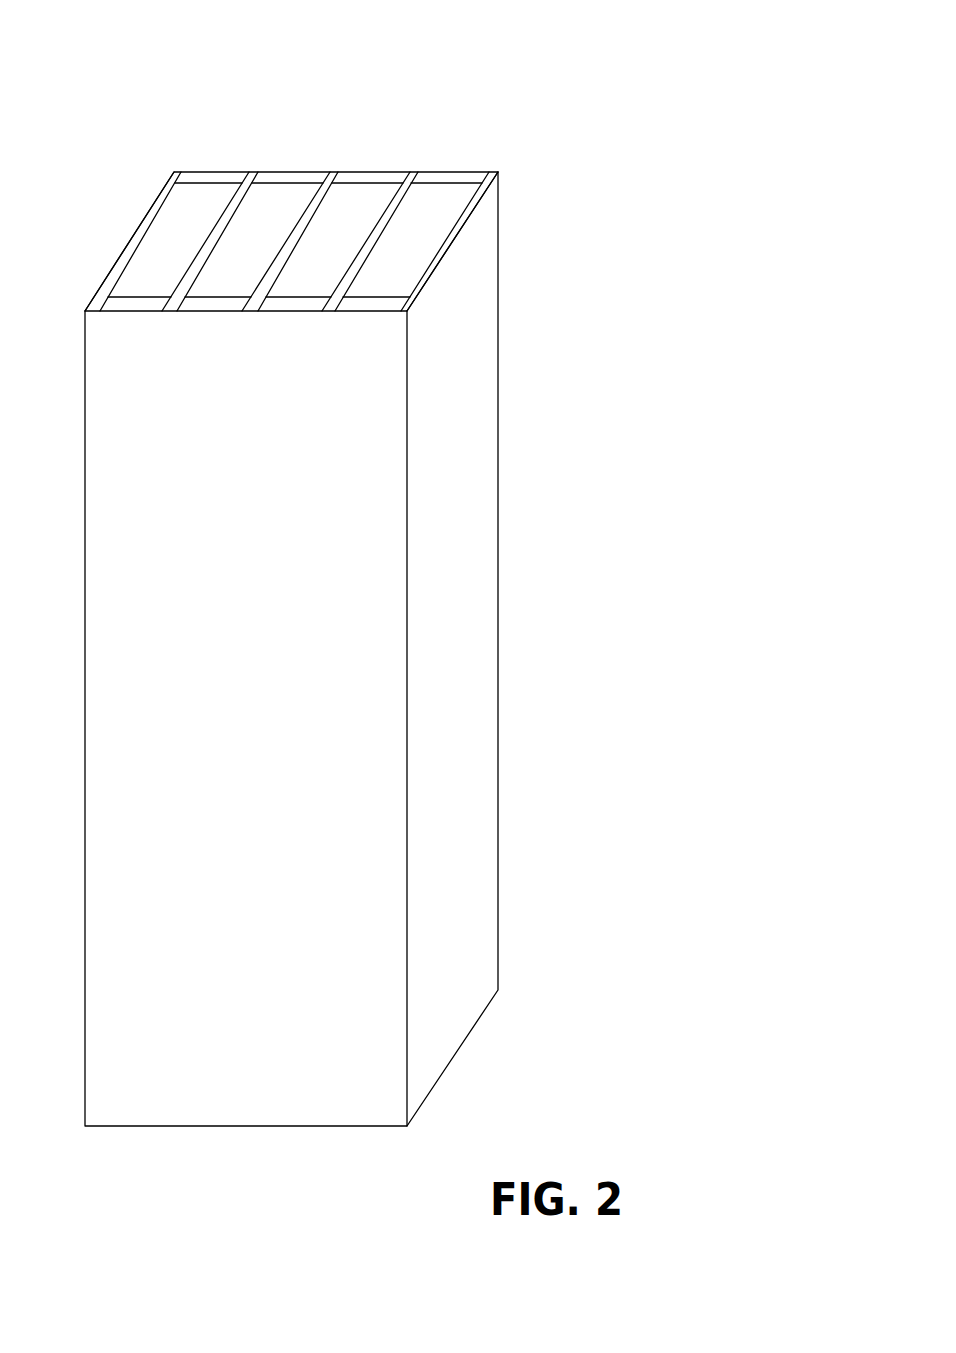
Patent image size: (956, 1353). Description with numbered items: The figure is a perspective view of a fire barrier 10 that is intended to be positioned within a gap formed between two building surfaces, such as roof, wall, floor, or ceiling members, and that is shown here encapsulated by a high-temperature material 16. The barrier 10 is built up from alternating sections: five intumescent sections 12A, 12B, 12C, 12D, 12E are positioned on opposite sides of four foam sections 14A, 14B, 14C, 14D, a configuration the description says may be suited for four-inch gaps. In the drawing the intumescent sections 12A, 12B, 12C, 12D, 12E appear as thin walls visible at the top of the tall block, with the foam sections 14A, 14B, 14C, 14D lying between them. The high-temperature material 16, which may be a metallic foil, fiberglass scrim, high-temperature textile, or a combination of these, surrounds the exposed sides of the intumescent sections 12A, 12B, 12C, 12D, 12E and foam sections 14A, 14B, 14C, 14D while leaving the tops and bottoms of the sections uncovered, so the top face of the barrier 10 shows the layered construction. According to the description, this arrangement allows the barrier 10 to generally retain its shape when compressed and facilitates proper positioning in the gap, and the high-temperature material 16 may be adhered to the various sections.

The fire barrier 10 is at (545, 78).
The intumescent section 12A is at (137, 231).
The intumescent section 12B is at (213, 232).
The intumescent section 12C is at (280, 260).
The intumescent section 12D is at (353, 268).
The intumescent section 12E is at (423, 286).
The foam section 14A is at (203, 197).
The foam section 14B is at (280, 197).
The foam section 14C is at (358, 197).
The foam section 14D is at (440, 197).
The high-temperature material 16 is at (330, 538).